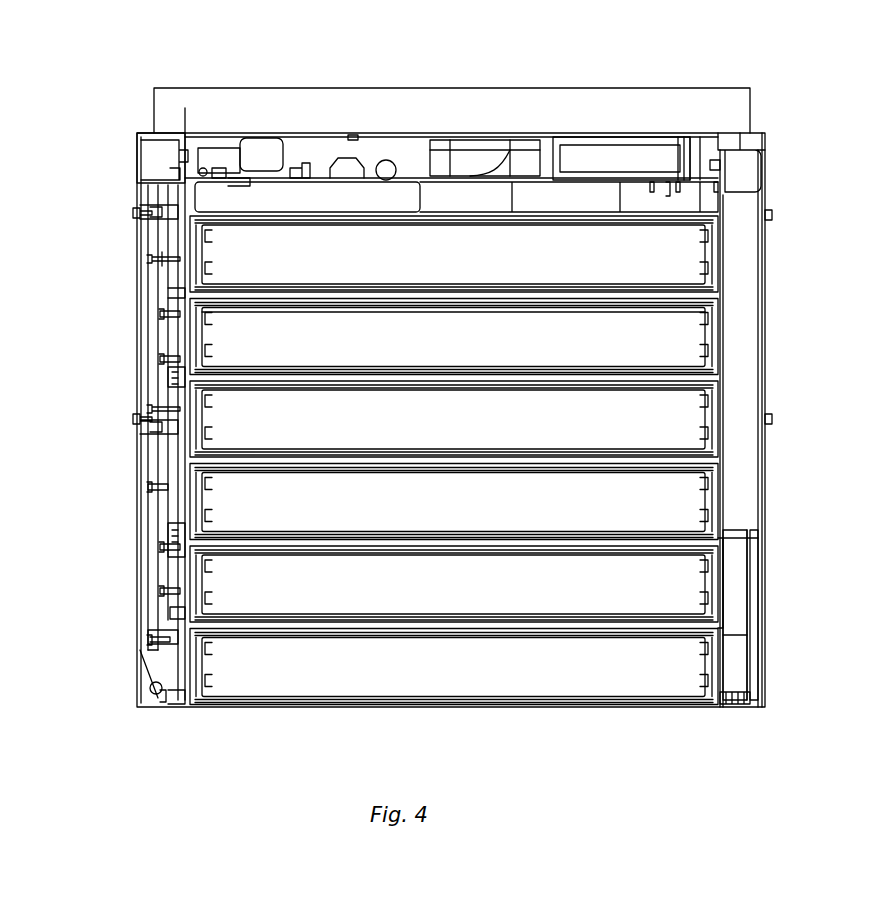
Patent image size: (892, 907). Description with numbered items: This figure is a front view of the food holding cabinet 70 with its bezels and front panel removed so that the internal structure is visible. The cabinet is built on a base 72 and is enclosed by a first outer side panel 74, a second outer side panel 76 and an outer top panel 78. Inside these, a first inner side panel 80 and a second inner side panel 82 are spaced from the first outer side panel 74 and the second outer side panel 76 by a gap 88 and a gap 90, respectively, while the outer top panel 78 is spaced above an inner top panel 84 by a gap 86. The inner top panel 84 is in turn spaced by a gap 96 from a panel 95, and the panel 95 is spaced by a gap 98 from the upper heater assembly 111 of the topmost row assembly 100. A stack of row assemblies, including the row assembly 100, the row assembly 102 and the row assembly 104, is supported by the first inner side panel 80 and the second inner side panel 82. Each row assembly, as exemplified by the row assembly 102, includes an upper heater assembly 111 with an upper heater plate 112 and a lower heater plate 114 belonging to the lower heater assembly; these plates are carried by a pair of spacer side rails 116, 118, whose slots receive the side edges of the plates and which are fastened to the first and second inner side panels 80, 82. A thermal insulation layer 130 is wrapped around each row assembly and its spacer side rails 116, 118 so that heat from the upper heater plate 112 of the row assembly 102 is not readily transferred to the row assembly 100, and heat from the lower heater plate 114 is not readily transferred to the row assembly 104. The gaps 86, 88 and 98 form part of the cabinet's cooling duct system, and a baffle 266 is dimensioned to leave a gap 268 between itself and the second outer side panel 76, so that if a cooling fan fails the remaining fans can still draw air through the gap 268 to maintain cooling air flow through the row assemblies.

The food holding cabinet 70 is at (576, 60).
The base 72 is at (723, 710).
The first outer side panel 74 is at (158, 439).
The second outer side panel 76 is at (764, 560).
The outer top panel 78 is at (258, 88).
The first inner side panel 80 is at (164, 492).
The second inner side panel 82 is at (736, 570).
The inner top panel 84 is at (222, 133).
The gap 86 is at (442, 88).
The gap 88 is at (164, 567).
The gap 90 is at (740, 544).
The panel 95 is at (410, 173).
The gap 96 is at (366, 150).
The gap 98 is at (384, 216).
The row assembly 100 is at (128, 246).
The row assembly 102 is at (128, 336).
The row assembly 104 is at (118, 394).
The upper heater assembly 111 is at (290, 204).
The upper heater plate 112 is at (378, 308).
The lower heater plate 114 is at (350, 368).
The spacer side rail 116 is at (210, 348).
The spacer side rail 118 is at (692, 322).
The thermal insulation layer 130 is at (478, 292).
The baffle 266 is at (748, 322).
The gap 268 is at (764, 282).